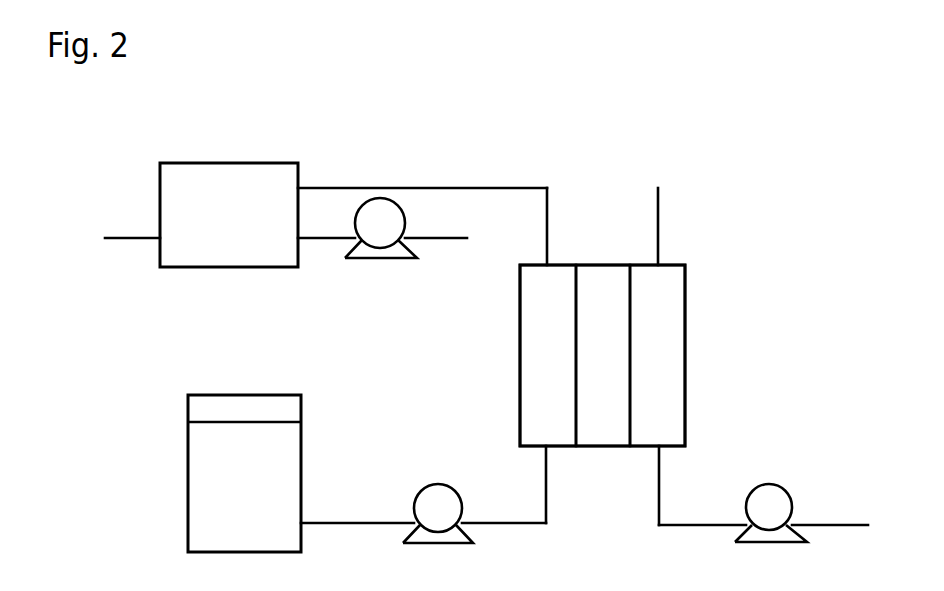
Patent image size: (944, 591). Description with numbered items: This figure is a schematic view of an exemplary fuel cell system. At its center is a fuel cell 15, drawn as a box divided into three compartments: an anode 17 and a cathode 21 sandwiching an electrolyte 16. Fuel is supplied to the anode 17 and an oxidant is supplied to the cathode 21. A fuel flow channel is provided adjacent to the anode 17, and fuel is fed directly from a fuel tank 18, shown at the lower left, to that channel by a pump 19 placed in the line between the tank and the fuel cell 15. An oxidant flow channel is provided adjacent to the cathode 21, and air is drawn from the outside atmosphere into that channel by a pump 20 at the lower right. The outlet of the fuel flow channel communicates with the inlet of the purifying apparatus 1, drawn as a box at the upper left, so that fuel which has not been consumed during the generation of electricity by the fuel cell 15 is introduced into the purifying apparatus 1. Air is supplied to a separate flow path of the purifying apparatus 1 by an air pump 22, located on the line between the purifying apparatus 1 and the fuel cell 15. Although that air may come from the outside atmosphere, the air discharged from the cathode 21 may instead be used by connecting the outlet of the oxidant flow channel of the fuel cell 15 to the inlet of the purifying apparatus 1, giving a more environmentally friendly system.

The purifying apparatus 1 is at (222, 162).
The air pump 22 is at (388, 207).
The fuel cell 15 is at (703, 398).
The electrolyte 16 is at (595, 297).
The anode 17 is at (537, 328).
The cathode 21 is at (667, 332).
The fuel tank 18 is at (302, 465).
The pump 19 is at (433, 488).
The pump 20 is at (772, 490).